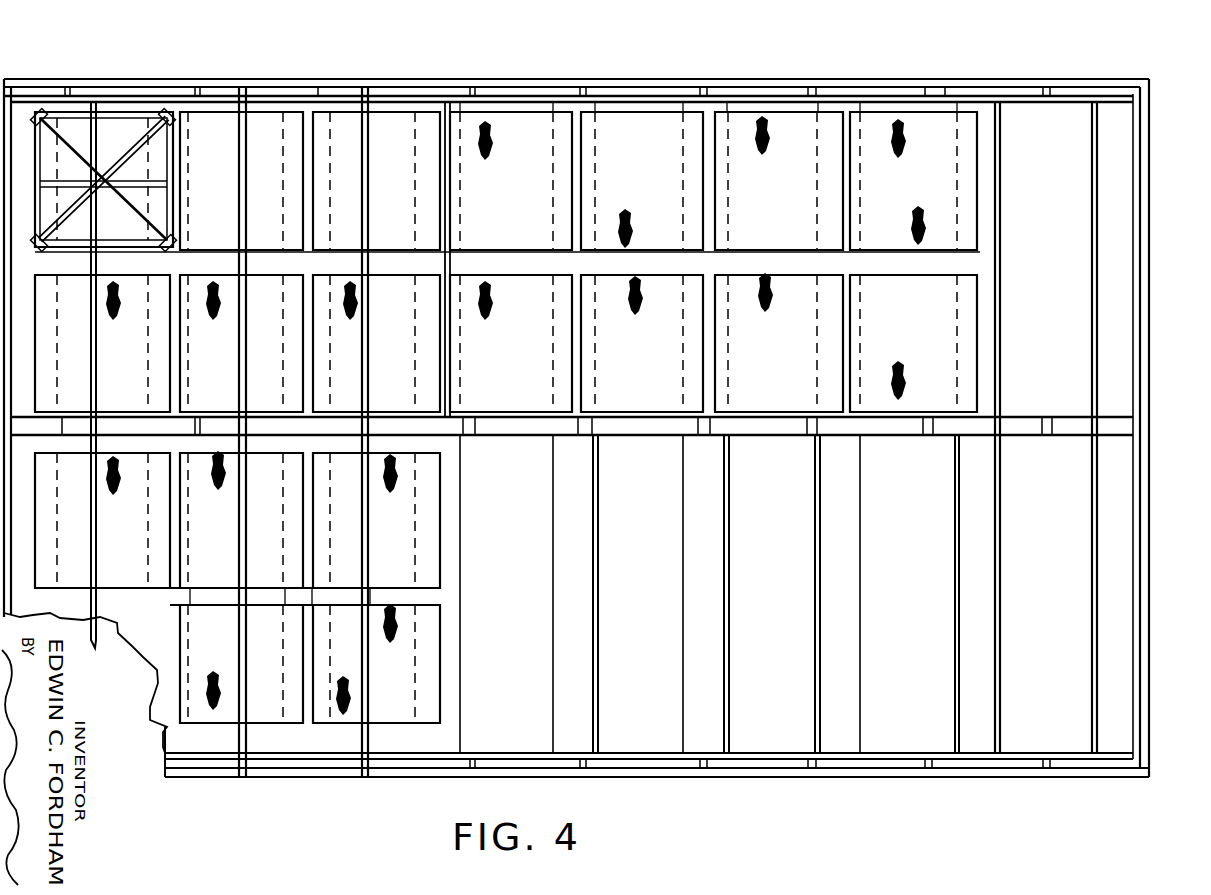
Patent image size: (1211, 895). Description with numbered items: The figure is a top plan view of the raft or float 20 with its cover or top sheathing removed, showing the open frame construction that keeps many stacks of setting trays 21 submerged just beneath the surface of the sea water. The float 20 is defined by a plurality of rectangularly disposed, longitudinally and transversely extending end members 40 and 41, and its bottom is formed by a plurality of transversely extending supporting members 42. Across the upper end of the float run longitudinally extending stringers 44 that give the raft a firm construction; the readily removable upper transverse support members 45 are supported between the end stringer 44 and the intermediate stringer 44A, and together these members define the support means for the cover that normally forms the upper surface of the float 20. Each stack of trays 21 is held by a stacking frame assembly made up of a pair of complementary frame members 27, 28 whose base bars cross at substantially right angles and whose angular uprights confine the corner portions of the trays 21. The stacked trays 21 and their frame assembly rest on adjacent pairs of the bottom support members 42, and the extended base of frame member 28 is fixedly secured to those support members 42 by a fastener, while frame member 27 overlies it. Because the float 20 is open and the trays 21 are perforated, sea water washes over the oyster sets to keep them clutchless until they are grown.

The raft or float 20 is at (813, 57).
The setting tray 21 is at (174, 167).
The frame member 27 is at (121, 147).
The frame member 28 is at (156, 218).
The end member 40 is at (567, 80).
The end member 41 is at (1141, 668).
The transversely extending supporting member 42 is at (457, 343).
The longitudinally extending stringer 44 is at (663, 95).
The intermediate stringer 44A is at (651, 432).
The upper transverse support member 45 is at (250, 152).